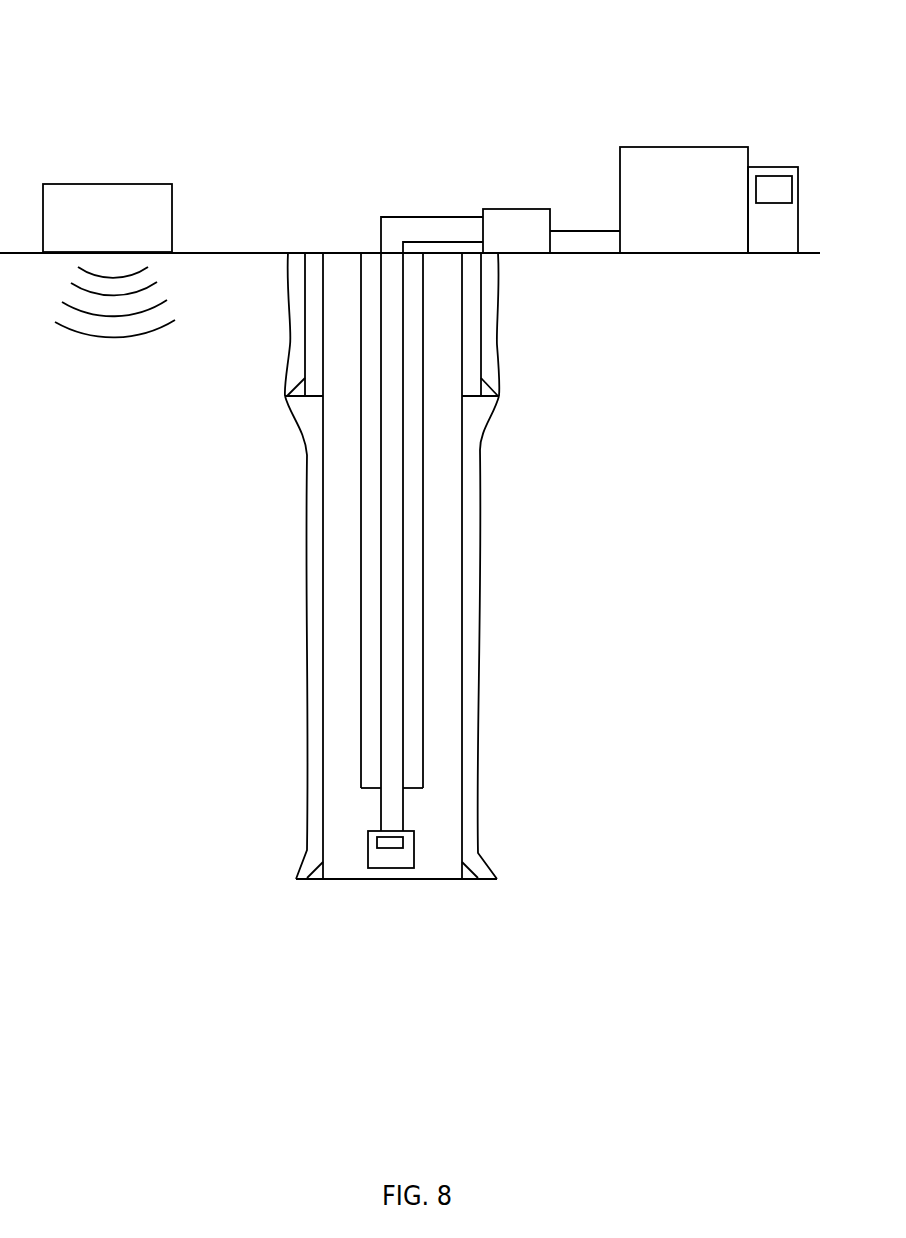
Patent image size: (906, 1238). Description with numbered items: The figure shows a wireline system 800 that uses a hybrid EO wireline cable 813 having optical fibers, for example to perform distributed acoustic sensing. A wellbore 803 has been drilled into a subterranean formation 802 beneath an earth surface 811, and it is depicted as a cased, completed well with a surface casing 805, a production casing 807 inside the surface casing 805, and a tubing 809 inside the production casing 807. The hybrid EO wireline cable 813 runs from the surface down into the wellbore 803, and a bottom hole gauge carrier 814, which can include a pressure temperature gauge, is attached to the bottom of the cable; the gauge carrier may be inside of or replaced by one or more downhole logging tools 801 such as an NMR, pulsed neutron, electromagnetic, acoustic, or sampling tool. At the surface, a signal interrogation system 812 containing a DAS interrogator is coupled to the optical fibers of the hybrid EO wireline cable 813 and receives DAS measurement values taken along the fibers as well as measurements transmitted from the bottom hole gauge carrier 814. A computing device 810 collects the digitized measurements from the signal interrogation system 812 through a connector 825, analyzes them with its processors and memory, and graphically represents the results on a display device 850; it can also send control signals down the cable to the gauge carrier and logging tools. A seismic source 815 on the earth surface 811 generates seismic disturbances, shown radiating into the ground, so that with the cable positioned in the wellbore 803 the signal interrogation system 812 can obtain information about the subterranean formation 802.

The wireline system 800 is at (350, 71).
The downhole logging tool 801 is at (413, 868).
The subterranean formation 802 is at (765, 387).
The wellbore 803 is at (302, 478).
The surface casing 805 is at (481, 338).
The production casing 807 is at (463, 455).
The tubing 809 is at (423, 512).
The computing device 810 is at (703, 208).
The earth surface 811 is at (202, 252).
The signal interrogation system 812 is at (535, 246).
The hybrid EO wireline cable 813 is at (381, 322).
The bottom hole gauge carrier 814 is at (403, 847).
The seismic source 815 is at (135, 226).
The connector 825 is at (590, 230).
The display device 850 is at (773, 175).